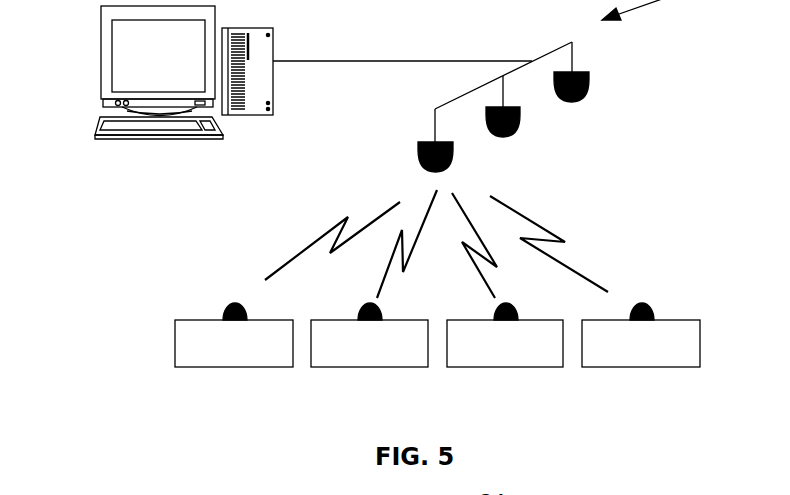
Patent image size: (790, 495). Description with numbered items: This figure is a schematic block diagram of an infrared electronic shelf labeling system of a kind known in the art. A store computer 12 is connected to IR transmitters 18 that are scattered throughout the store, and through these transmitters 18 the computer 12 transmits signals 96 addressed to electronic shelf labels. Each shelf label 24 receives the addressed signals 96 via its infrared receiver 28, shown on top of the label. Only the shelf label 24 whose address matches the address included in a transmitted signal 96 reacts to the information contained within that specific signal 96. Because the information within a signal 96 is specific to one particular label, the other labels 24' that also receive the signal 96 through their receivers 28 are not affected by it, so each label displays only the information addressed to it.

The store computer 12 is at (102, 40).
The IR transmitters 18 is at (427, 142).
The signals 96 is at (312, 242).
The infrared receivers 28 is at (225, 312).
The electronic shelf label 24 is at (234, 363).
The other labels 24' is at (505, 362).